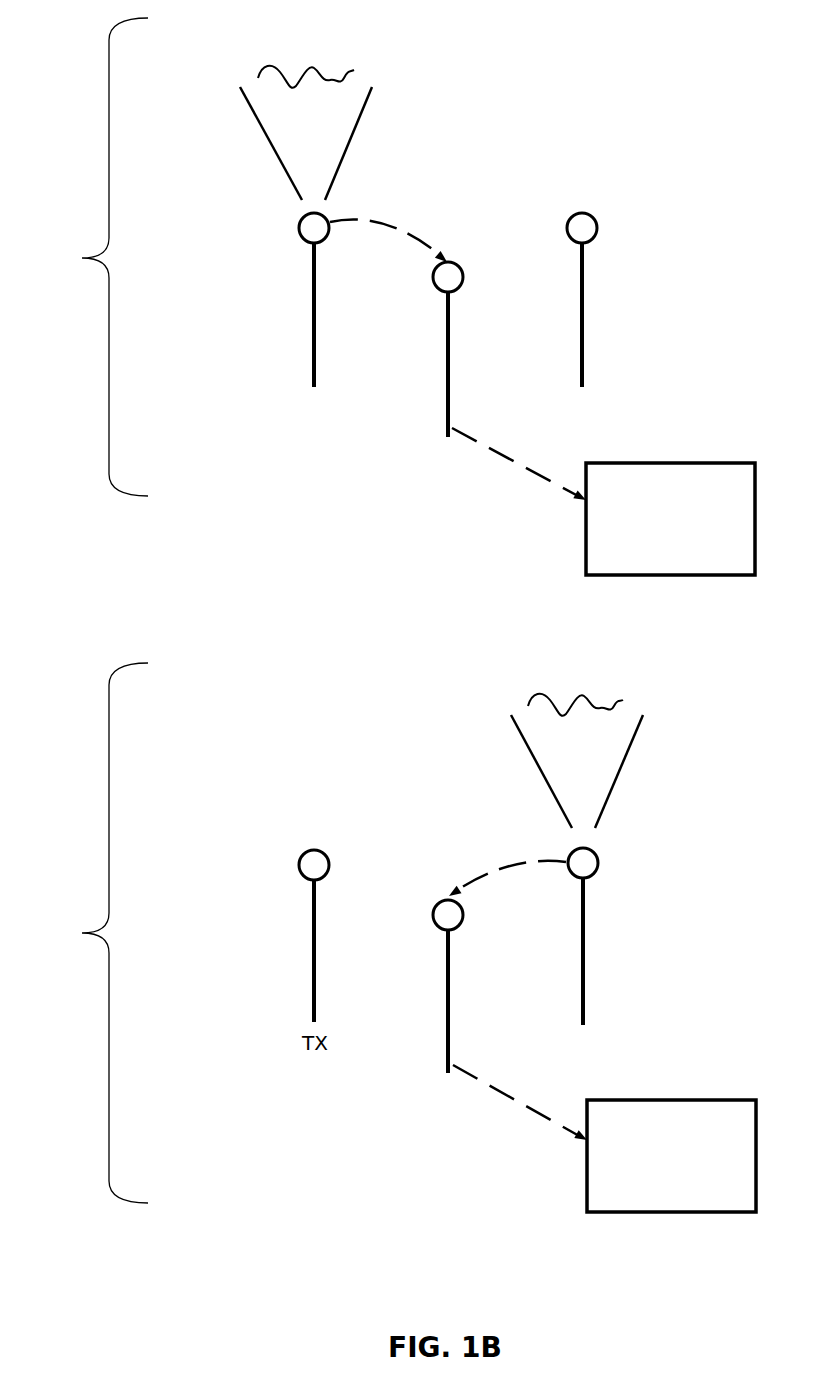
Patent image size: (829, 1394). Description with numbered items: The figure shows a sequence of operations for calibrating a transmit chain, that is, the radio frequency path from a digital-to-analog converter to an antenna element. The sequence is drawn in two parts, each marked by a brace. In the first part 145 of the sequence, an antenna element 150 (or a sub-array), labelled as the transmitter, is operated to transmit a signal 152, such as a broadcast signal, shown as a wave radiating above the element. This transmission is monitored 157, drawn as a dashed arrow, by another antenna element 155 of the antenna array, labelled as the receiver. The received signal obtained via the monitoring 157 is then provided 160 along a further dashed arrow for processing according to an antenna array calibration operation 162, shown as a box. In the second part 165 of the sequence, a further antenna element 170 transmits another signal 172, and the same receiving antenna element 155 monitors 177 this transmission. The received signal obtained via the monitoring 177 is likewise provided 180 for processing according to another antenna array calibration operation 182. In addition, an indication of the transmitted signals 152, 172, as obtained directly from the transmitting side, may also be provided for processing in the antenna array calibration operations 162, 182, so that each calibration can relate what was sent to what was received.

The first part of the sequence 145 is at (91, 257).
The antenna element 150 is at (302, 214).
The signal 152 is at (284, 62).
The another antenna element 155 is at (436, 269).
The monitoring 157 is at (388, 225).
The providing 160 is at (557, 482).
The antenna array calibration operation 162 is at (670, 519).
The second part of the sequence 165 is at (91, 933).
The further antenna element 170 is at (599, 858).
The another signal 172 is at (555, 692).
The monitoring 177 is at (507, 869).
The providing 180 is at (554, 1118).
The another antenna array calibration operation 182 is at (671, 1156).